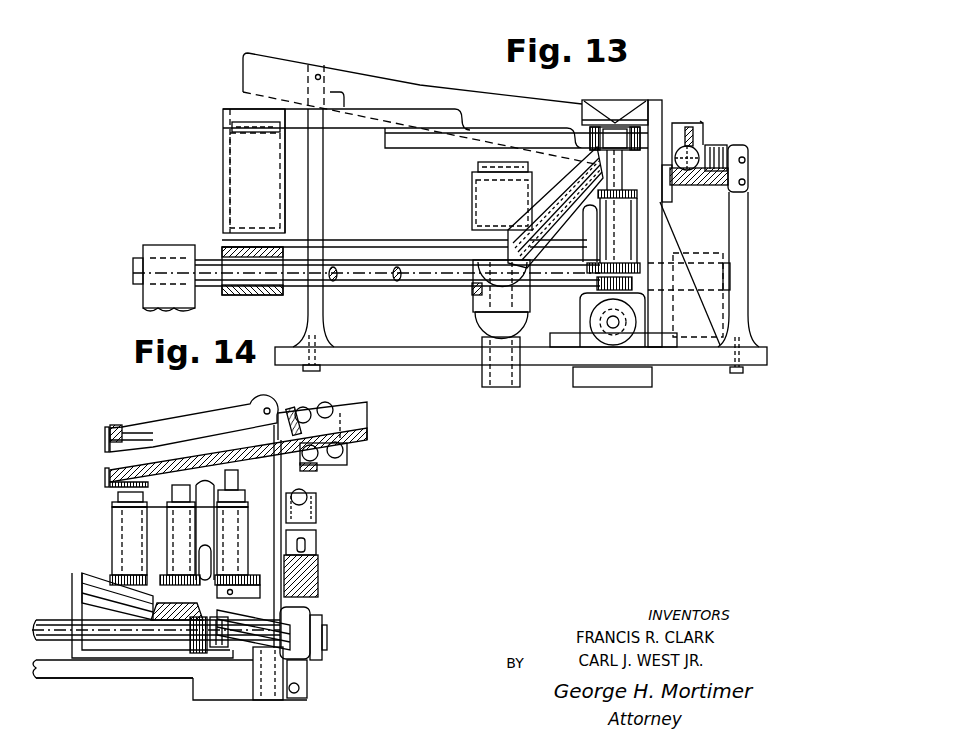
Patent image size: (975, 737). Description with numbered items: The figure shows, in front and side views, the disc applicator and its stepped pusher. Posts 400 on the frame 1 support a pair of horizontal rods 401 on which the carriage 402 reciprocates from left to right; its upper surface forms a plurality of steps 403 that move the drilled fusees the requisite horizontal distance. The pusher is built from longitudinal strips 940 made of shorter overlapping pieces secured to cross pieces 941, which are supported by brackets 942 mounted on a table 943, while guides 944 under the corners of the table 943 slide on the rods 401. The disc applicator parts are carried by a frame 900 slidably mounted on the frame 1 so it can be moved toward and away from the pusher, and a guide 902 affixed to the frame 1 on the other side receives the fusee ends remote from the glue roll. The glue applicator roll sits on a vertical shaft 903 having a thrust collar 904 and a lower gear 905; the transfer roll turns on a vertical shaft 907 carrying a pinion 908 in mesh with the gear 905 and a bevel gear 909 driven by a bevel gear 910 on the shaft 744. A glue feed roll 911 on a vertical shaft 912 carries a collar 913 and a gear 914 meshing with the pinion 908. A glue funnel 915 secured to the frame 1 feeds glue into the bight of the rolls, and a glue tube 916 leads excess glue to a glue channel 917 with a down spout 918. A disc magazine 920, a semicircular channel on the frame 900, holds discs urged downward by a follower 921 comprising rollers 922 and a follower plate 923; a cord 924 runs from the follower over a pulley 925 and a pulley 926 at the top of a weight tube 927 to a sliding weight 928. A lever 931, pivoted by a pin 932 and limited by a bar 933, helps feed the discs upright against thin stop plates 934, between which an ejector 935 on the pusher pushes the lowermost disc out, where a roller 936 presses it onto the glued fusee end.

In FIG. 13, the frame 1 is at (402, 365).
In FIG. 14, the frame 1 is at (158, 680).
In FIG. 13, the posts 400 is at (143, 299).
In FIG. 13, the horizontal rods 401 is at (341, 290).
In FIG. 13, the carriage 402 is at (212, 181).
In FIG. 13, the steps 403 is at (332, 92).
In FIG. 13, the shaft 744 is at (617, 323).
In FIG. 14, the shaft 744 is at (36, 622).
In FIG. 13, the frame 900 is at (586, 319).
In FIG. 13, the guide 902 is at (278, 59).
In FIG. 14, the vertical shaft 903 is at (118, 498).
In FIG. 14, the collar 904 is at (113, 508).
In FIG. 14, the gear 905 is at (112, 556).
In FIG. 14, the vertical shaft 907 is at (179, 490).
In FIG. 14, the pinion 908 is at (170, 562).
In FIG. 14, the bevel gear 909 is at (222, 606).
In FIG. 14, the bevel gear 910 is at (180, 658).
In FIG. 13, the glue feed roll 911 is at (590, 134).
In FIG. 13, the vertical shaft 912 is at (618, 172).
In FIG. 14, the vertical shaft 912 is at (240, 500).
In FIG. 14, the collar 913 is at (249, 530).
In FIG. 13, the gear 914 is at (590, 264).
In FIG. 14, the gear 914 is at (247, 555).
In FIG. 13, the glue funnel 915 is at (622, 112).
In FIG. 13, the glue tube 916 is at (550, 183).
In FIG. 14, the glue tube 916 is at (176, 520).
In FIG. 13, the glue channel 917 is at (475, 306).
In FIG. 14, the glue channel 917 is at (85, 580).
In FIG. 13, the down spout 918 is at (481, 370).
In FIG. 14, the down spout 918 is at (257, 700).
In FIG. 13, the disc magazine 920 is at (691, 188).
In FIG. 14, the disc magazine 920 is at (364, 407).
In FIG. 14, the follower 921 is at (348, 459).
In FIG. 14, the rollers 922 is at (324, 402).
In FIG. 14, the follower plate 923 is at (285, 407).
In FIG. 14, the cord 924 is at (285, 470).
In FIG. 14, the pulley 925 is at (240, 482).
In FIG. 14, the pulley 926 is at (316, 511).
In FIG. 14, the weight tube 927 is at (318, 550).
In FIG. 14, the weight 928 is at (319, 572).
In FIG. 13, the lever 931 is at (694, 134).
In FIG. 14, the lever 931 is at (191, 423).
In FIG. 14, the pin 932 is at (262, 412).
In FIG. 13, the bar 933 is at (689, 126).
In FIG. 14, the bar 933 is at (116, 424).
In FIG. 13, the stop plates 934 is at (687, 158).
In FIG. 14, the stop plates 934 is at (104, 435).
In FIG. 13, the ejector 935 is at (661, 137).
In FIG. 13, the roller 936 is at (746, 162).
In FIG. 13, the strips 940 is at (373, 131).
In FIG. 13, the cross pieces 941 is at (228, 121).
In FIG. 13, the brackets 942 is at (238, 140).
In FIG. 13, the table 943 is at (386, 246).
In FIG. 13, the guides 944 is at (246, 296).